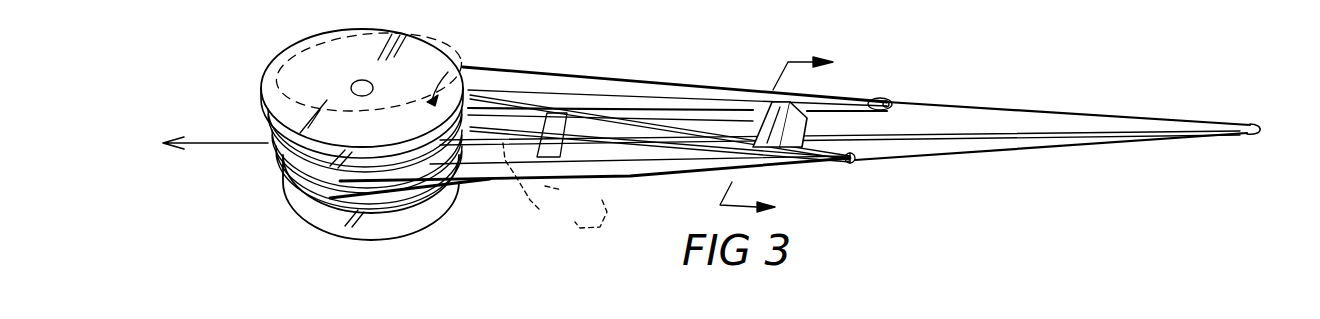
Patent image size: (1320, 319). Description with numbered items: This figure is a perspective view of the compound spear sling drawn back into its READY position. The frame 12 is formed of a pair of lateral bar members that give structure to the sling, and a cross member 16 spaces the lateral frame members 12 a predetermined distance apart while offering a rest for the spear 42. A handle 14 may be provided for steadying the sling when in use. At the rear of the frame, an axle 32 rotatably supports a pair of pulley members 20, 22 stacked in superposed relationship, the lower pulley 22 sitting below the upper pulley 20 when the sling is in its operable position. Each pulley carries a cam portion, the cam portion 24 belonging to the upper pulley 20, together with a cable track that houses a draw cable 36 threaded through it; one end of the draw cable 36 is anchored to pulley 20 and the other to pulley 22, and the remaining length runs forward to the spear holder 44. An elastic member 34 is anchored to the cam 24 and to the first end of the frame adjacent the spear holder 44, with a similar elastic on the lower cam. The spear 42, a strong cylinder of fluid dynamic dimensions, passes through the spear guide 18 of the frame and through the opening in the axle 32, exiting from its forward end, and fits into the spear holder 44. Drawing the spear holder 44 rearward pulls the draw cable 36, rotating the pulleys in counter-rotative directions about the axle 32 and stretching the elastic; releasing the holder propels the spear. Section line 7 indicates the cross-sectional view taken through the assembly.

The section line 7- 7 is at (784, 125).
The frame 12 is at (503, 102).
The handle 14 is at (563, 187).
The cross member 16 is at (600, 107).
The block 18 is at (800, 112).
The pulley member 20 is at (323, 62).
The pulley member 22 is at (310, 227).
The cam portion 24 is at (450, 41).
The axle 32 is at (351, 88).
The elastic member 34 is at (663, 120).
The draw cable 36 is at (567, 73).
The spear 42 is at (993, 133).
The spear holder 44 is at (1258, 128).